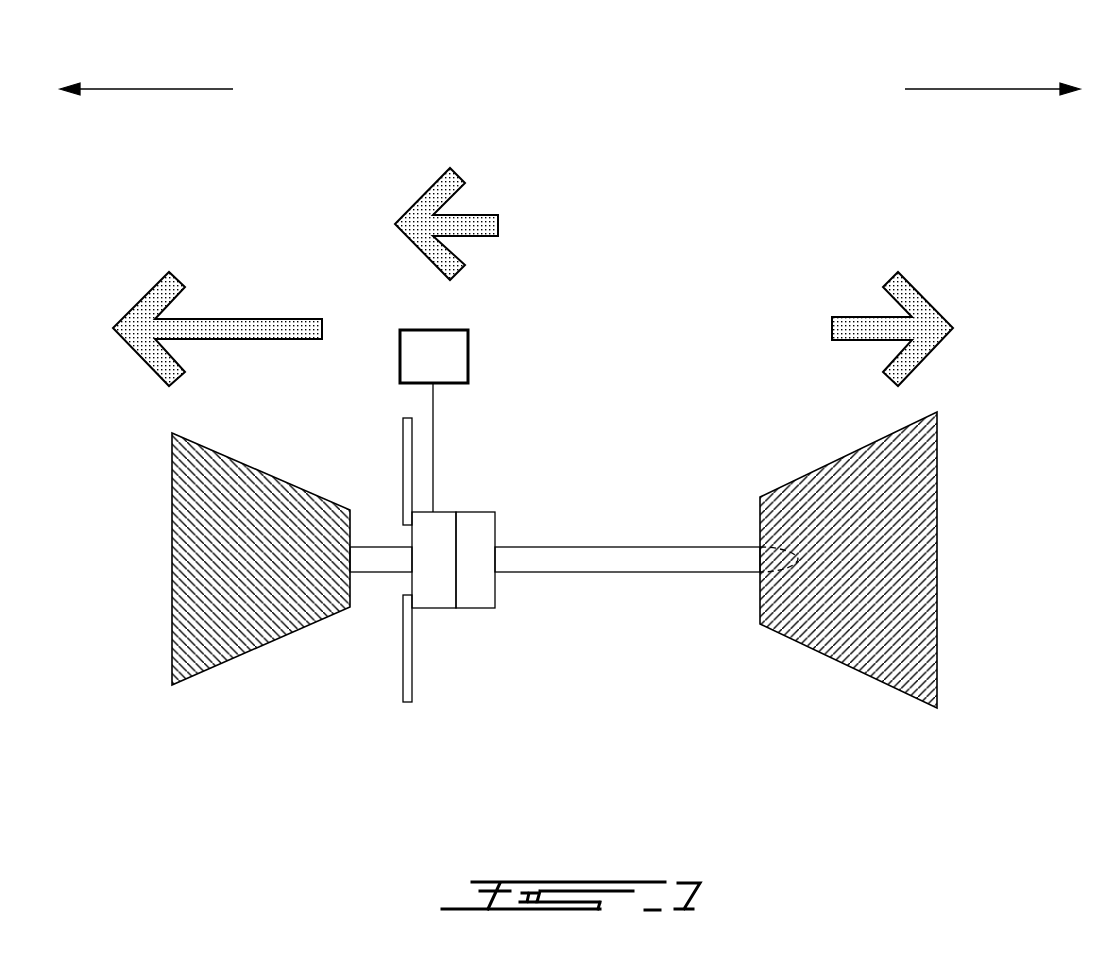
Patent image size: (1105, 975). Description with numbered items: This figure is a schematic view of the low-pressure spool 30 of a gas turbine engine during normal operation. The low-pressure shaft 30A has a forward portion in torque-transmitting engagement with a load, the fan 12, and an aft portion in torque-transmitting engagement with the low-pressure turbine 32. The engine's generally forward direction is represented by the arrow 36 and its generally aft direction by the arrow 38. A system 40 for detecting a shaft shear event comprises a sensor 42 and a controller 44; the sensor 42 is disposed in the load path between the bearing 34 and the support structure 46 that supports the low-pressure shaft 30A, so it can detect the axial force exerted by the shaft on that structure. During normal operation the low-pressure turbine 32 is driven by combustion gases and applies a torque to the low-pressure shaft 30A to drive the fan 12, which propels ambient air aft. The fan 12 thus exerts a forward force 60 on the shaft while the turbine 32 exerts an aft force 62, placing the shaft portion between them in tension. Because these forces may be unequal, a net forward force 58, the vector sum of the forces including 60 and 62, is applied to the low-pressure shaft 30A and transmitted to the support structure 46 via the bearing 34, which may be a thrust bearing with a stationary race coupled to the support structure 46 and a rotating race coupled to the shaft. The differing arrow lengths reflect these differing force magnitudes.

The fan 12 is at (172, 548).
The low-pressure spool 30 is at (605, 687).
The low-pressure shaft 30A is at (646, 613).
The low-pressure turbine 32 is at (940, 535).
The bearing 34 is at (481, 512).
The forward direction 36 is at (148, 88).
The aft direction 38 is at (993, 88).
The system 40 is at (456, 502).
The sensor 42 is at (436, 613).
The controller 44 is at (420, 372).
The support structure 46 is at (403, 455).
The net forward force 58 is at (478, 222).
The forward force 60 is at (243, 327).
The aft force 62 is at (918, 302).